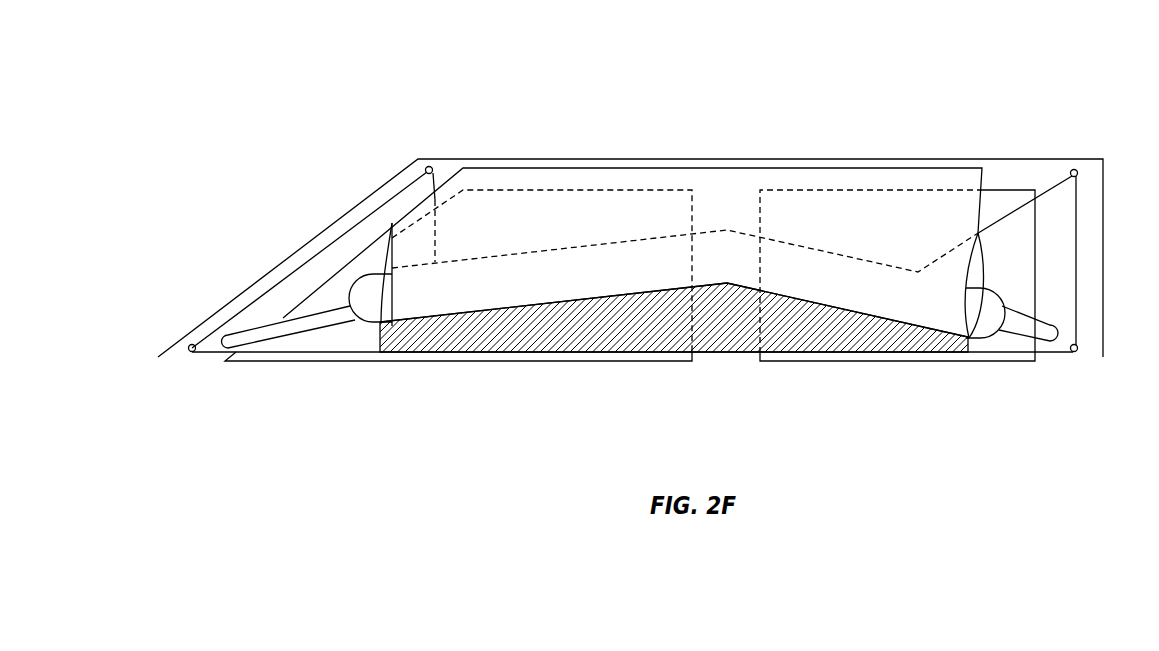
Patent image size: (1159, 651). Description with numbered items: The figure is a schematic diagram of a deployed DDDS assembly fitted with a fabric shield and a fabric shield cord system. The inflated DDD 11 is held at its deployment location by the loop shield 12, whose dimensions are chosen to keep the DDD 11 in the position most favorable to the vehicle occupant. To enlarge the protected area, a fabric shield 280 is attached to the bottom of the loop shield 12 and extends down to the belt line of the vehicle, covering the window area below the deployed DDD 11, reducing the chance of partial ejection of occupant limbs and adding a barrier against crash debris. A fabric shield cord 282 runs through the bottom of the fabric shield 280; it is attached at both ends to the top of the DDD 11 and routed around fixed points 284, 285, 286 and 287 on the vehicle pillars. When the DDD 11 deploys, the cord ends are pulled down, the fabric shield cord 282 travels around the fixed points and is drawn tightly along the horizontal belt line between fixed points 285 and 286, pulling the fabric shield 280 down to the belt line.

The DDD 11 is at (487, 303).
The loop shield 12 is at (752, 168).
The fabric shield 280 is at (633, 337).
The fabric shield cord 282 is at (287, 270).
The fixed point 284 is at (428, 166).
The fixed point 285 is at (191, 352).
The fixed point 286 is at (1076, 352).
The fixed point 287 is at (1076, 170).